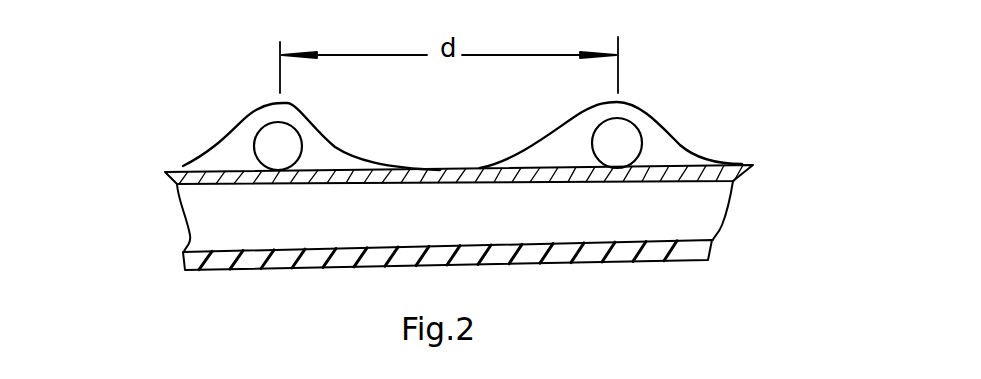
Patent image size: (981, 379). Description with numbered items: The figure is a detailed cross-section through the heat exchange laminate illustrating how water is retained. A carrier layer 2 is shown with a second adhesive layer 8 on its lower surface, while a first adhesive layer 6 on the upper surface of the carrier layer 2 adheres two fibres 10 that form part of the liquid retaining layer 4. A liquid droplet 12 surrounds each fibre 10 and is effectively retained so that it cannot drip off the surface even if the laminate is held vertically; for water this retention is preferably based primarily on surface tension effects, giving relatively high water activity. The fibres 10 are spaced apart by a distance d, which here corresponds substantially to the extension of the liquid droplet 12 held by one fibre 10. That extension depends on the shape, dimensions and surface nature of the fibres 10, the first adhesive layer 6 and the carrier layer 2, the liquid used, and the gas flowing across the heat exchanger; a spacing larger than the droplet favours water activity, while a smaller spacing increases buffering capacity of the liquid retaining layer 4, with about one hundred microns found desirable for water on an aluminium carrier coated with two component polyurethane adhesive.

The carrier layer 2 is at (180, 221).
The liquid retaining layer 4 is at (695, 132).
The first adhesive layer 6 is at (172, 184).
The second adhesive layer 8 is at (183, 262).
The fibres 10 is at (641, 128).
The liquid droplet 12 is at (223, 138).